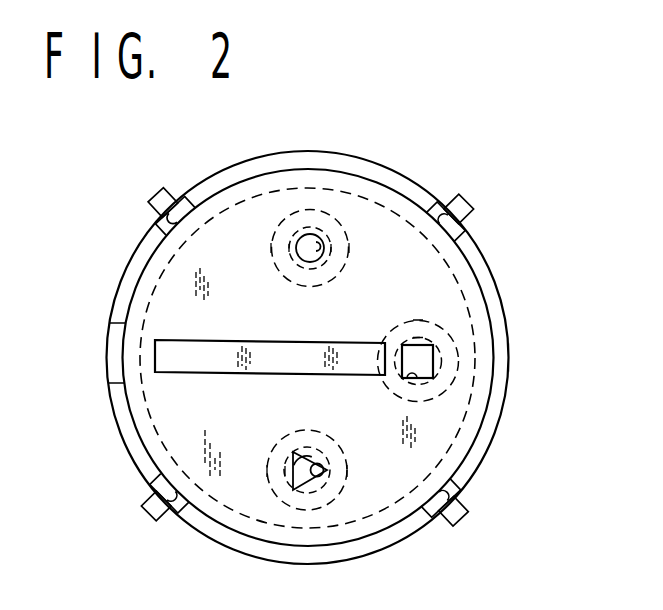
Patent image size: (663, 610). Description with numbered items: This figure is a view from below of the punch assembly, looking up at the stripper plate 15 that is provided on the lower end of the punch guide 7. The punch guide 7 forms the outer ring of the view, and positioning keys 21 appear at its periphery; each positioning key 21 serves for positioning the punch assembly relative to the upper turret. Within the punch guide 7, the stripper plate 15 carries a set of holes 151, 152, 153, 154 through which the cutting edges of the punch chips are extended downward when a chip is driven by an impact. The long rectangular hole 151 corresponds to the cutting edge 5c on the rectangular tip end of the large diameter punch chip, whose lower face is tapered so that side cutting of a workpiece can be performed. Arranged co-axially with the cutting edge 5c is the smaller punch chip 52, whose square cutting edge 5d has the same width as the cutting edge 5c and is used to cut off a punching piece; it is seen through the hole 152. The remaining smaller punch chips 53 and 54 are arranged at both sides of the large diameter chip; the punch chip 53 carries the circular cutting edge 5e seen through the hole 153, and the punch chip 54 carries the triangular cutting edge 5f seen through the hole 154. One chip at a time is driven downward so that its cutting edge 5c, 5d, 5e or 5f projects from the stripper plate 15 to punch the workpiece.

The punch guide 7 is at (498, 303).
The positioning key 21 is at (474, 209).
The stripper plate 15 is at (443, 431).
The hole of stripper plate 151 is at (270, 352).
The hole of stripper plate 152 is at (400, 353).
The hole of stripper plate 153 is at (314, 267).
The hole of stripper plate 154 is at (313, 449).
The cutting edge 5c is at (246, 341).
The square cutting edge 5d is at (413, 350).
The circular cutting edge 5e is at (296, 249).
The triangular cutting edge 5f is at (293, 452).
The punch chip 52 is at (412, 333).
The punch chip 53 is at (286, 275).
The punch chip 54 is at (279, 441).